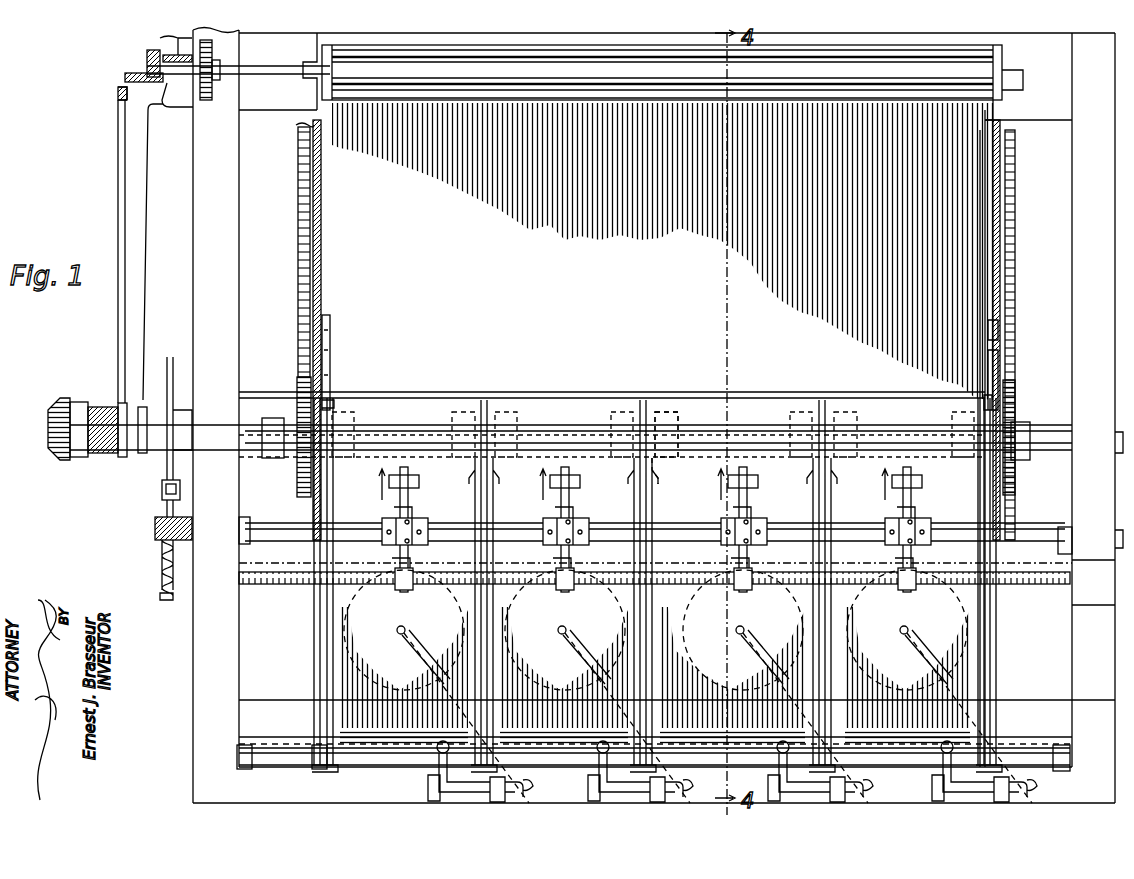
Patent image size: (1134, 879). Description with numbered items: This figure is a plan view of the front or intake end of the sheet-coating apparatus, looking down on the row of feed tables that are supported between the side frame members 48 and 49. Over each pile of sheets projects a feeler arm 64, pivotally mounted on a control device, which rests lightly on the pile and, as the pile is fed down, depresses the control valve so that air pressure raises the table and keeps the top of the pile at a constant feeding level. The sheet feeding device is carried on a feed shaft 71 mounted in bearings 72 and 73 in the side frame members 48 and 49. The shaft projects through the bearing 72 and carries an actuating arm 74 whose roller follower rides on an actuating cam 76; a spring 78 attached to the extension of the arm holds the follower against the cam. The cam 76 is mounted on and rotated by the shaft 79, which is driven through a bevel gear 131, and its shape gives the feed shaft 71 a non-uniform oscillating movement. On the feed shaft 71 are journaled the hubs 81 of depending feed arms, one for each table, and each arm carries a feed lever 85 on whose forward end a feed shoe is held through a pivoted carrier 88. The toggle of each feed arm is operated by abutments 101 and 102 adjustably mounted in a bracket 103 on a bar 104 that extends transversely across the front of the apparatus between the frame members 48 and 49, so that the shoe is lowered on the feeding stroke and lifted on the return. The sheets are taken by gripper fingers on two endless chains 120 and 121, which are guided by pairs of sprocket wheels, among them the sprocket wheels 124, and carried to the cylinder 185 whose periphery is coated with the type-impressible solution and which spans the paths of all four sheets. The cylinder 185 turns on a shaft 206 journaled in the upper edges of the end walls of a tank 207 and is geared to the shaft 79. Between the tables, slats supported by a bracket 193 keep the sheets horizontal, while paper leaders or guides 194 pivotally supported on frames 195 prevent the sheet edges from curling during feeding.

The side frame member 48 is at (210, 228).
The side frame member 49 is at (1082, 292).
The arm 64 is at (437, 767).
The feed shaft 71 is at (690, 528).
The bearing 72 is at (243, 520).
The bearing 73 is at (1063, 533).
The actuating arm 74 is at (164, 503).
The actuating cam 76 is at (165, 472).
The spring 78 is at (165, 560).
The shaft 79 is at (255, 430).
The hub 81 is at (405, 530).
The feed lever 85 is at (566, 500).
The carrier 88 is at (752, 485).
The abutment 101 is at (828, 516).
The abutment 102 is at (905, 575).
The fixture or bracket 103 is at (415, 578).
The bar 104 is at (735, 578).
The endless chain 120 is at (306, 166).
The endless chain 121 is at (1009, 203).
The sprocket wheels 124 is at (306, 388).
The bevel gear 131 is at (65, 400).
The cylinder 185 is at (487, 104).
The bracket 193 is at (930, 467).
The paper leaders or guides 194 is at (685, 450).
The frame 195 is at (864, 489).
The shaft 206 is at (227, 71).
The tank 207 is at (655, 100).